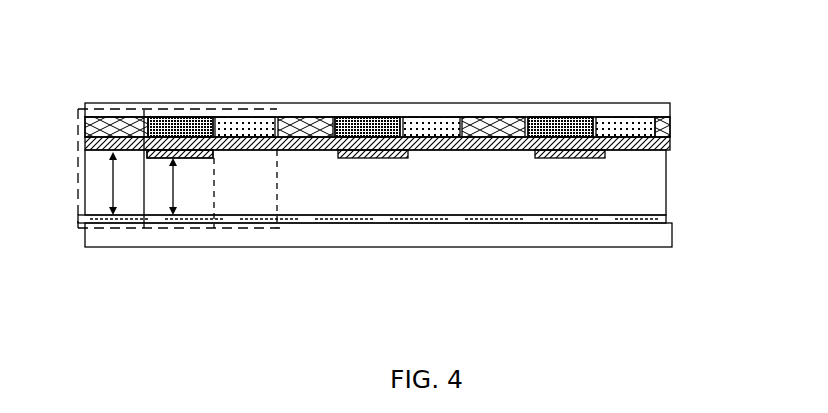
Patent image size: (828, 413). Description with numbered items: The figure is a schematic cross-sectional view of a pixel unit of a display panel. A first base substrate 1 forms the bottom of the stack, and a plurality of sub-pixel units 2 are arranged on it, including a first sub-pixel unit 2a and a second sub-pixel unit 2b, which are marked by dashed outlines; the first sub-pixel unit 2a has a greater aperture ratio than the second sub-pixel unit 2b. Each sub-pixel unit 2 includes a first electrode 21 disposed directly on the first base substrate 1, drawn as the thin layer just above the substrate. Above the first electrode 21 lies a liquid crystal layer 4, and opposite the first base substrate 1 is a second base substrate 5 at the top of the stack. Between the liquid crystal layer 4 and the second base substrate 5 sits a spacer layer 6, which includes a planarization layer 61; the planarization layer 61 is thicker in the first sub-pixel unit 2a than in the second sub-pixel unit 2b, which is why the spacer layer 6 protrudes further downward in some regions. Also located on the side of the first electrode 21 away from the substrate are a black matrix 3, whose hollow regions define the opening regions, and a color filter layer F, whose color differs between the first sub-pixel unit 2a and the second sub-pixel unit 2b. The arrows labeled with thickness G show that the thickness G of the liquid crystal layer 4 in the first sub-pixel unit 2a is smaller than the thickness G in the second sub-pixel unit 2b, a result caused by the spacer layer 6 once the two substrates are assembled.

The first base substrate 1 is at (672, 235).
The sub-pixel unit 2 is at (180, 182).
The first sub-pixel unit 2a is at (183, 108).
The second sub-pixel unit 2b is at (240, 228).
The black matrix 3 is at (332, 117).
The liquid crystal layer 4 is at (666, 168).
The second base substrate 5 is at (668, 102).
The spacer layer 6 is at (670, 132).
The planarization layer 61 is at (180, 154).
The first electrode 21 is at (666, 213).
The color filter layer F is at (608, 117).
The thickness of the liquid crystal layer G is at (113, 183).